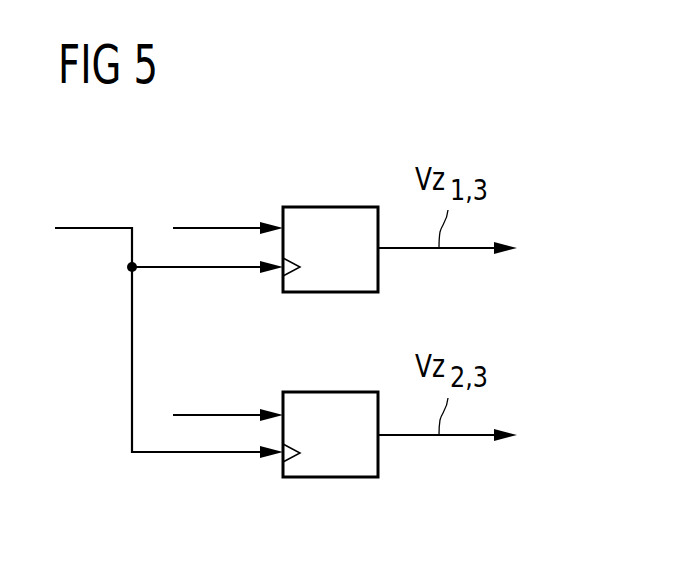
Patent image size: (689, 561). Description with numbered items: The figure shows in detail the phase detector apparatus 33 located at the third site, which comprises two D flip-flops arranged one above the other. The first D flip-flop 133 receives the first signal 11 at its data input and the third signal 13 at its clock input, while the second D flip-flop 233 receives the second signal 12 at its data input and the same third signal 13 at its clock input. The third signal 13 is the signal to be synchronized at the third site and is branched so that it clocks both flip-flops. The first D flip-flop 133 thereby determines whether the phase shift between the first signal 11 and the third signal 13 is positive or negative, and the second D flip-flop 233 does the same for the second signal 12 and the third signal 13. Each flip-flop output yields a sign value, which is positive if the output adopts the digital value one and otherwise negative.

The third signal 13 is at (91, 228).
The first signal 11 is at (215, 228).
The second signal 12 is at (215, 415).
The first D flip-flop 133 is at (332, 207).
The second D flip-flop 233 is at (332, 392).
The phase detector apparatus 33 is at (470, 106).